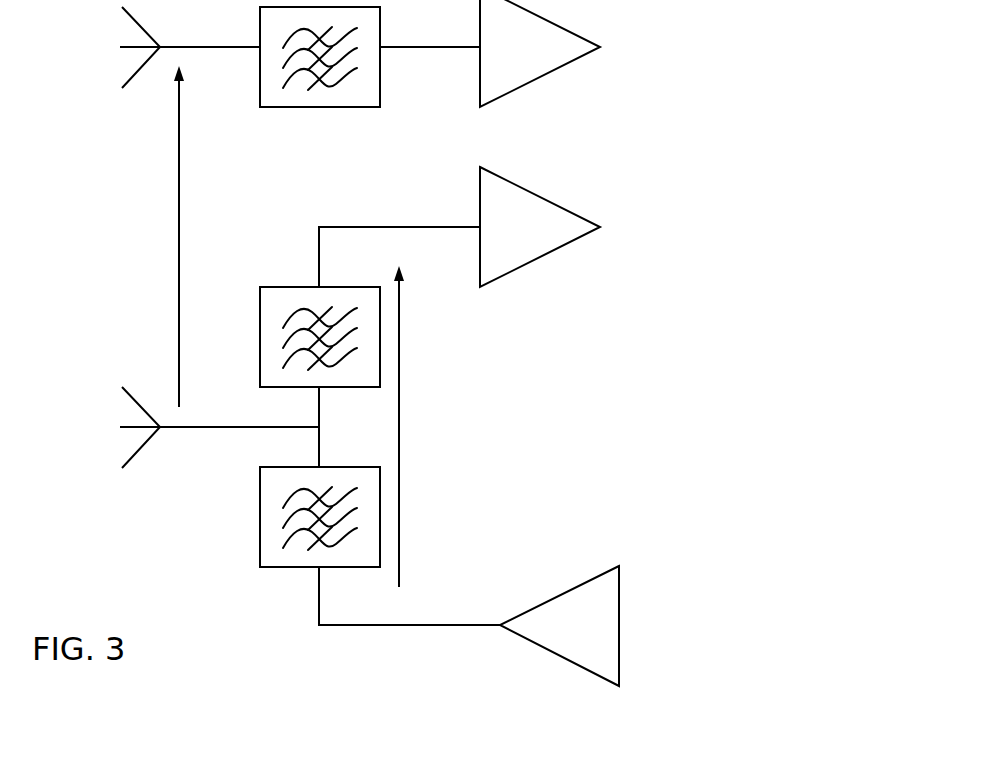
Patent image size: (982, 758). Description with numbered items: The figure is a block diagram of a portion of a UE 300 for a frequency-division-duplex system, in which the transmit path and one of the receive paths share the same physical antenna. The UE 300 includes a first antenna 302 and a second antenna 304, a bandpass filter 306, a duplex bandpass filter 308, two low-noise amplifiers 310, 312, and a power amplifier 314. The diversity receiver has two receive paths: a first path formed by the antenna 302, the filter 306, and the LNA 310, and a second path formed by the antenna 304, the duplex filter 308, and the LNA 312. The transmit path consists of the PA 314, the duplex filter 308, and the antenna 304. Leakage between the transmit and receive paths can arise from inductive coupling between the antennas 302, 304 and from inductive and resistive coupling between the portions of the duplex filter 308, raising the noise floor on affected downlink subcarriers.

The UE 300 is at (178, 589).
The first antenna 302 is at (128, 70).
The second antenna 304 is at (128, 440).
The bandpass filter 306 is at (320, 78).
The duplex bandpass filter 308 is at (320, 427).
The low-noise amplifier 310 is at (542, 57).
The low-noise amplifier 312 is at (542, 233).
The power amplifier 314 is at (559, 605).